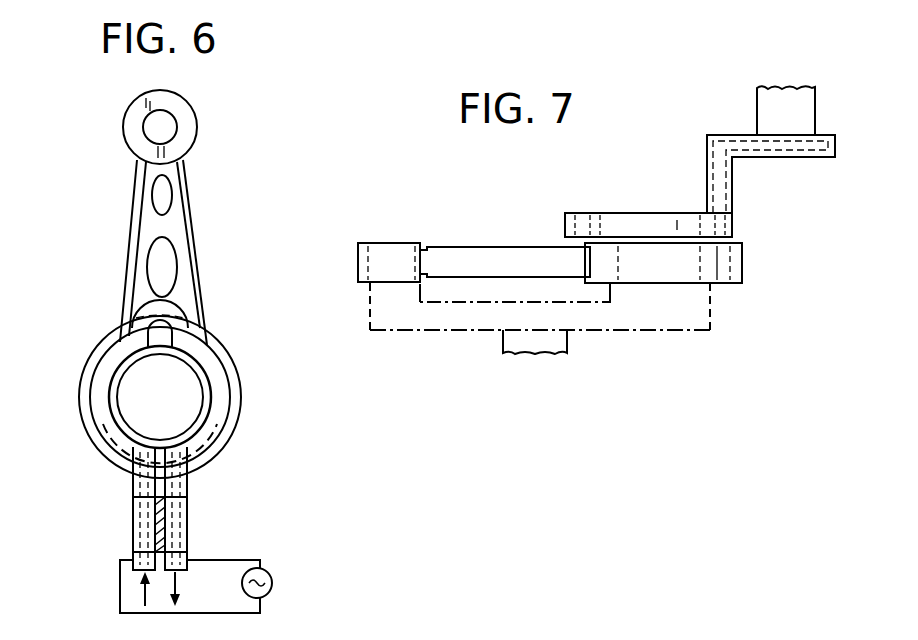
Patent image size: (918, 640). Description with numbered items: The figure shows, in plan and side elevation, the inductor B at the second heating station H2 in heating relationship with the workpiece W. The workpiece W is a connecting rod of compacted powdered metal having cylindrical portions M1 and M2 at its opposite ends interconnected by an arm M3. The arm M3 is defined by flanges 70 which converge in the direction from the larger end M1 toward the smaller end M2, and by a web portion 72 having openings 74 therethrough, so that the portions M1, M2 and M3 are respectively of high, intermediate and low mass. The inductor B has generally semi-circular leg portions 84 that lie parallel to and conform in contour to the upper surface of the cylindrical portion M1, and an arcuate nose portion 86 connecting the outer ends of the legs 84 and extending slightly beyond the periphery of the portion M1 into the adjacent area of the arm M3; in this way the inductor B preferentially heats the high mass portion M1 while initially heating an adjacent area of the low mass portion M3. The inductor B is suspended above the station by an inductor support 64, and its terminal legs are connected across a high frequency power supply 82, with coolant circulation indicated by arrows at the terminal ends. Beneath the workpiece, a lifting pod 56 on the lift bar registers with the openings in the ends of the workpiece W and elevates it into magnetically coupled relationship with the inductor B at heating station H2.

In FIG. 6, the cylindrical portion M1 is at (238, 378).
In FIG. 7, the cylindrical portion M1 is at (742, 272).
In FIG. 6, the cylindrical portion M2 is at (195, 110).
In FIG. 7, the cylindrical portion M2 is at (372, 243).
In FIG. 6, the arm M3 is at (200, 222).
In FIG. 7, the arm M3 is at (472, 252).
In FIG. 6, the workpiece W is at (210, 250).
In FIG. 7, the workpiece W is at (424, 235).
In FIG. 6, the inductor B is at (85, 420).
In FIG. 7, the inductor B is at (745, 223).
In FIG. 6, the heating station H2 is at (78, 464).
In FIG. 7, the heating station H2 is at (618, 178).
In FIG. 6, the flanges 70 is at (186, 172).
In FIG. 6, the web portion 72 is at (152, 232).
In FIG. 6, the openings 74 is at (158, 193).
In FIG. 6, the semi-circular leg portions 84 is at (112, 356).
In FIG. 7, the semi-circular leg portions 84 is at (630, 215).
In FIG. 6, the arcuate nose portion 86 is at (168, 312).
In FIG. 7, the arcuate nose portion 86 is at (567, 222).
In FIG. 6, the inductor supports 64 is at (187, 505).
In FIG. 7, the inductor supports 64 is at (760, 108).
In FIG. 6, the high frequency power supply 82 is at (272, 583).
In FIG. 7, the lifting pods 56 is at (648, 336).